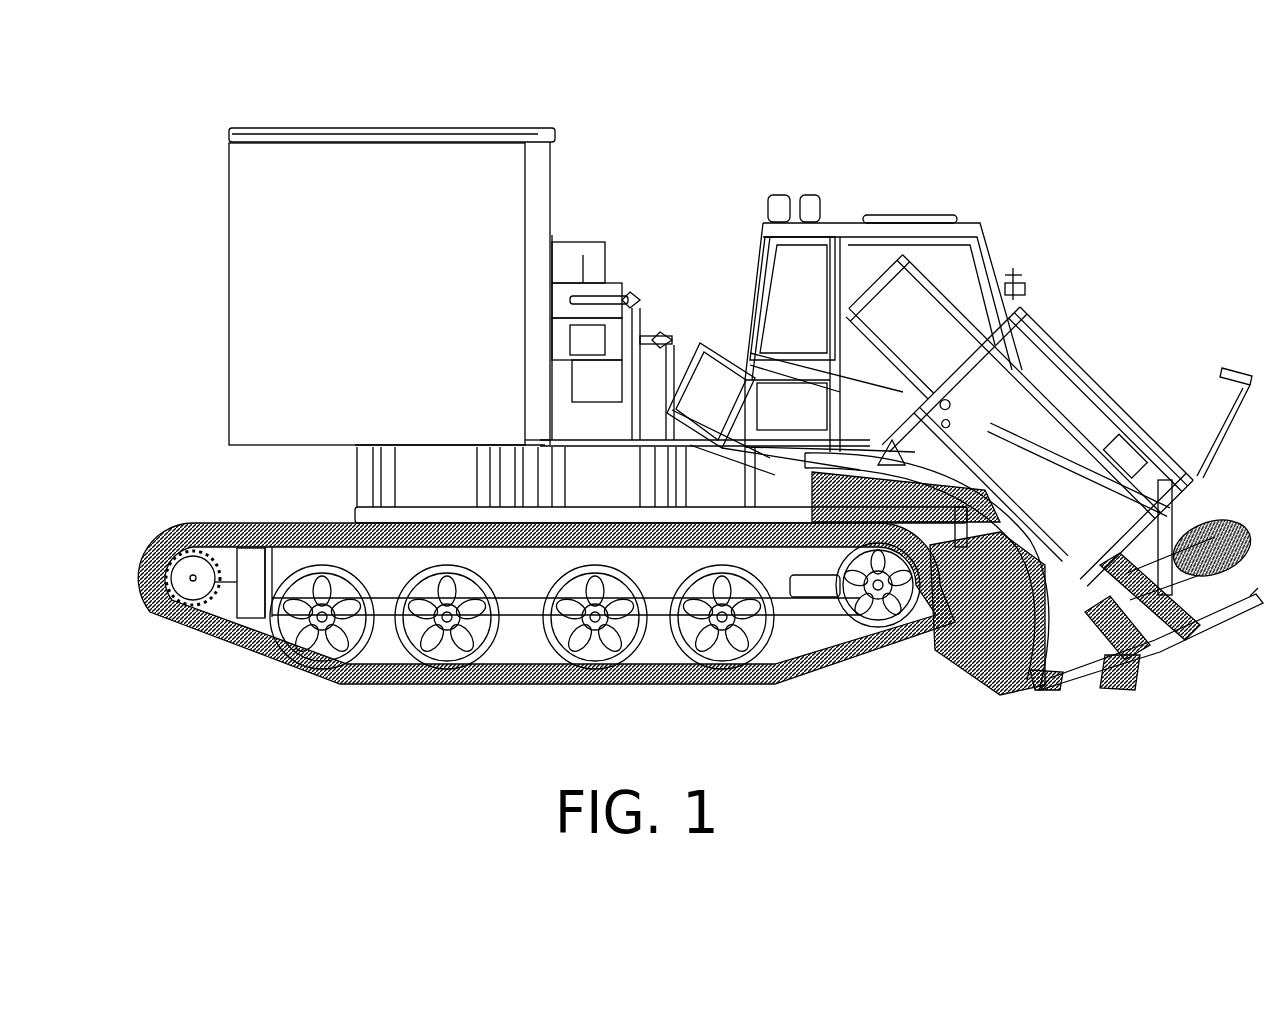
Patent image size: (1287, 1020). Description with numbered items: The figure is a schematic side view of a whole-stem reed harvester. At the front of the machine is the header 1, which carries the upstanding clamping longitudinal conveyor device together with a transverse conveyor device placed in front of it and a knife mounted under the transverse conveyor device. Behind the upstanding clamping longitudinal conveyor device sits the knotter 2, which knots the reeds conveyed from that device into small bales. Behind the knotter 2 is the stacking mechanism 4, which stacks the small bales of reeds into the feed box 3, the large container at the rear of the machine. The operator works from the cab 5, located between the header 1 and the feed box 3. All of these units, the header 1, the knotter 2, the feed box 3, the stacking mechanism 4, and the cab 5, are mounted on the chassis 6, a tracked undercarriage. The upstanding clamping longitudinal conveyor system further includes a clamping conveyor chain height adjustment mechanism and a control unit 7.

The header 1 is at (1092, 445).
The knotter 2 is at (700, 380).
The feed box 3 is at (313, 246).
The stacking mechanism 4 is at (575, 240).
The cab 5 is at (810, 325).
The chassis 6 is at (390, 673).
The control unit 7 is at (817, 427).